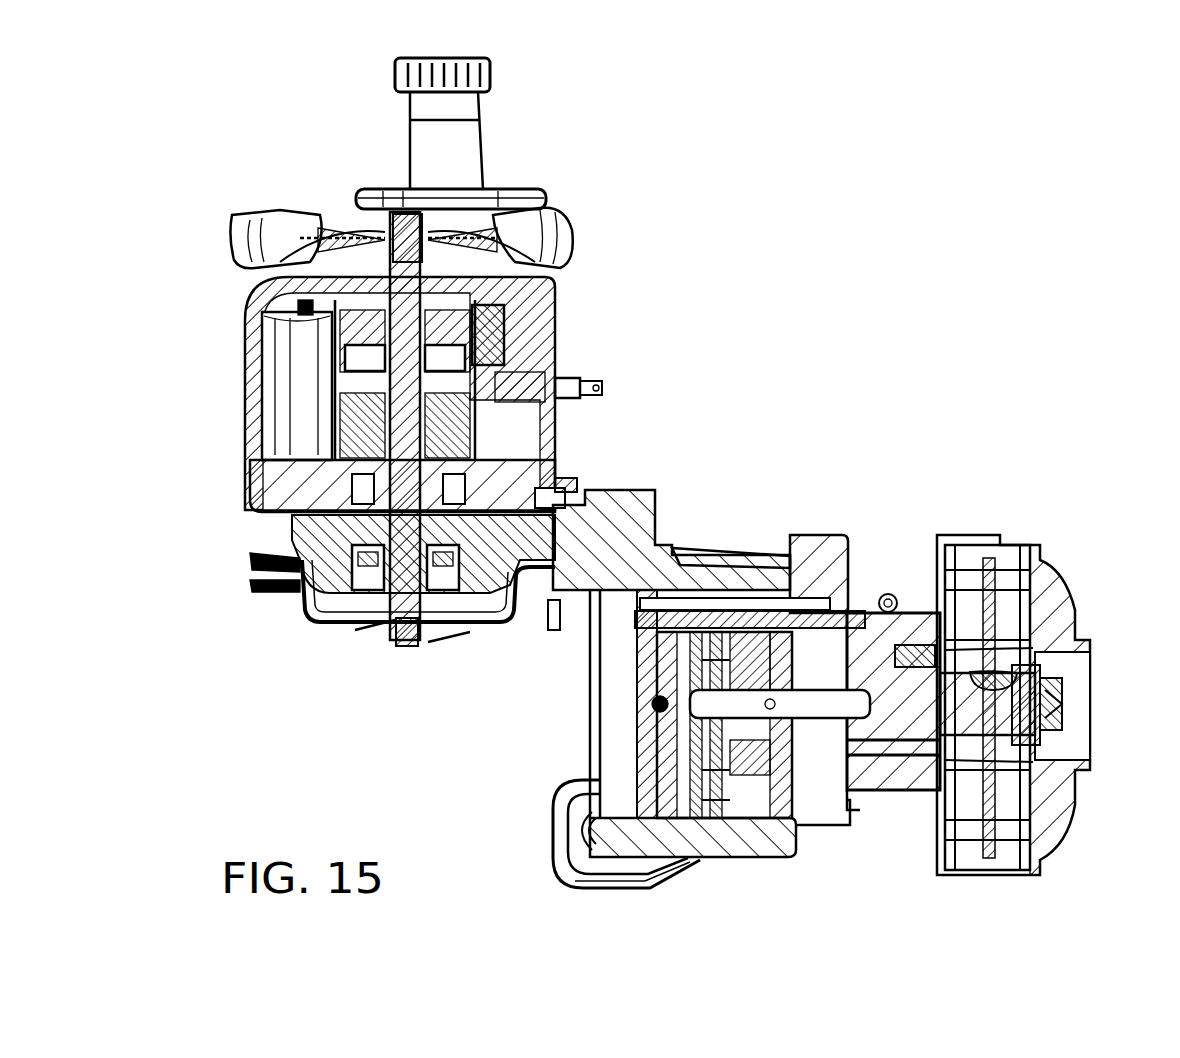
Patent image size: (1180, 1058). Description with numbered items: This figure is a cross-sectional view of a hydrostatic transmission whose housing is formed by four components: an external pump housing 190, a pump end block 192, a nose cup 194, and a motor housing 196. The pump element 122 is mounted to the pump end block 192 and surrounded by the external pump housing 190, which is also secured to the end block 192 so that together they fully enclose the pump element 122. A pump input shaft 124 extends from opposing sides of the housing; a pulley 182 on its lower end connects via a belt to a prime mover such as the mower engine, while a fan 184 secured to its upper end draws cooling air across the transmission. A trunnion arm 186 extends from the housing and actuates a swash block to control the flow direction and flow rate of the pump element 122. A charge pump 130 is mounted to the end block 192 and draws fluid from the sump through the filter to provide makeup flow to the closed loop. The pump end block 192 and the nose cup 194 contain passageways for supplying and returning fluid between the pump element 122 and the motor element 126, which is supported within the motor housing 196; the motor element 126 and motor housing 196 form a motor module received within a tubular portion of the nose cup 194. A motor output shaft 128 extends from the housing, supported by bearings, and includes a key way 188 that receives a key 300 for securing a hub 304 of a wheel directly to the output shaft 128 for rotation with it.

The pump element 122 is at (300, 416).
The pump input shaft 124 is at (405, 552).
The motor element 126 is at (768, 598).
The motor output shaft 128 is at (885, 680).
The charge pump 130 is at (460, 600).
The pulley 182 is at (515, 612).
The fan 184 is at (566, 243).
The trunnion arm 186 is at (603, 390).
The key way 188 is at (1063, 720).
The external pump housing 190 is at (248, 340).
The pump end block 192 is at (275, 483).
The nose cup 194 is at (652, 490).
The motor housing 196 is at (820, 820).
The key 300 is at (1037, 653).
The hub 304 is at (1050, 580).